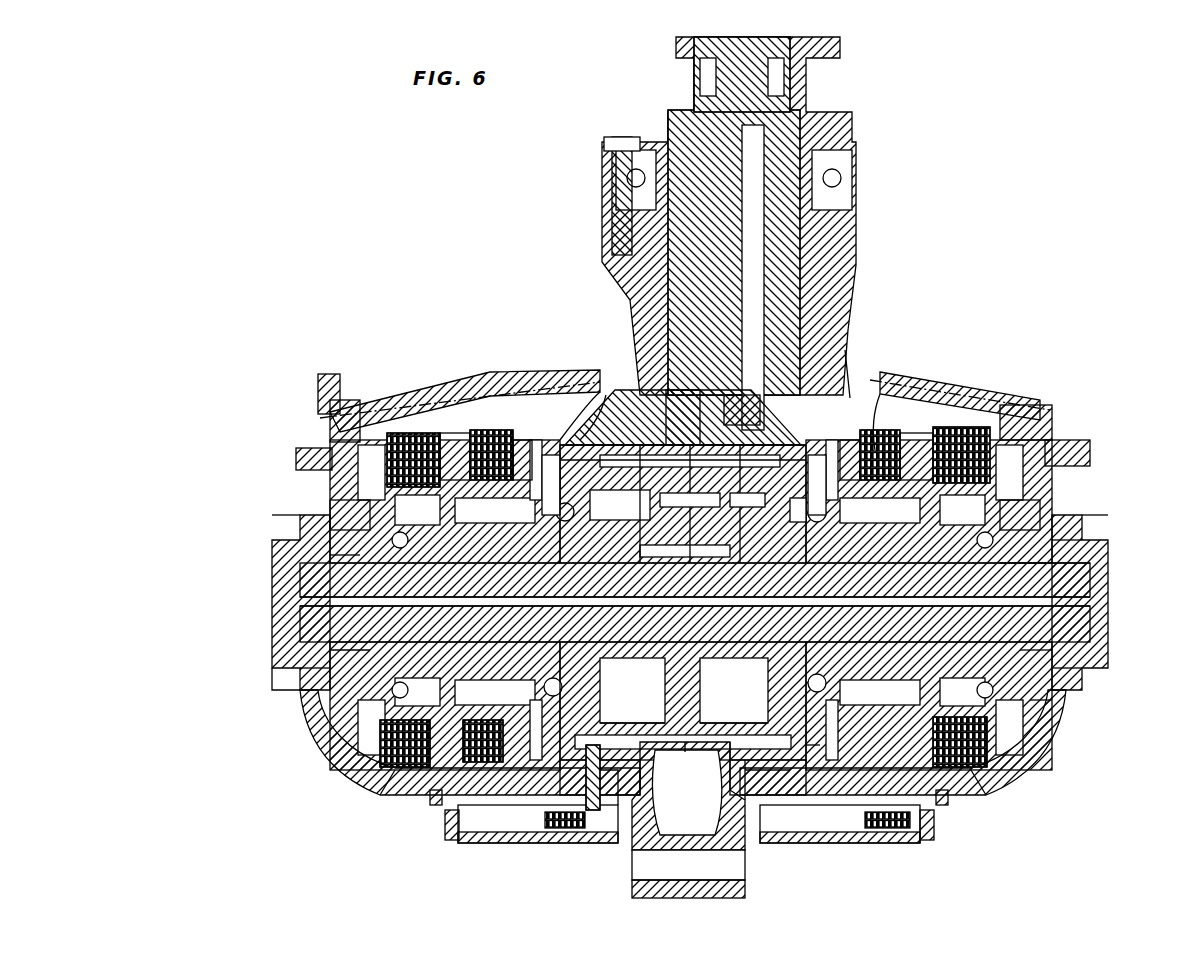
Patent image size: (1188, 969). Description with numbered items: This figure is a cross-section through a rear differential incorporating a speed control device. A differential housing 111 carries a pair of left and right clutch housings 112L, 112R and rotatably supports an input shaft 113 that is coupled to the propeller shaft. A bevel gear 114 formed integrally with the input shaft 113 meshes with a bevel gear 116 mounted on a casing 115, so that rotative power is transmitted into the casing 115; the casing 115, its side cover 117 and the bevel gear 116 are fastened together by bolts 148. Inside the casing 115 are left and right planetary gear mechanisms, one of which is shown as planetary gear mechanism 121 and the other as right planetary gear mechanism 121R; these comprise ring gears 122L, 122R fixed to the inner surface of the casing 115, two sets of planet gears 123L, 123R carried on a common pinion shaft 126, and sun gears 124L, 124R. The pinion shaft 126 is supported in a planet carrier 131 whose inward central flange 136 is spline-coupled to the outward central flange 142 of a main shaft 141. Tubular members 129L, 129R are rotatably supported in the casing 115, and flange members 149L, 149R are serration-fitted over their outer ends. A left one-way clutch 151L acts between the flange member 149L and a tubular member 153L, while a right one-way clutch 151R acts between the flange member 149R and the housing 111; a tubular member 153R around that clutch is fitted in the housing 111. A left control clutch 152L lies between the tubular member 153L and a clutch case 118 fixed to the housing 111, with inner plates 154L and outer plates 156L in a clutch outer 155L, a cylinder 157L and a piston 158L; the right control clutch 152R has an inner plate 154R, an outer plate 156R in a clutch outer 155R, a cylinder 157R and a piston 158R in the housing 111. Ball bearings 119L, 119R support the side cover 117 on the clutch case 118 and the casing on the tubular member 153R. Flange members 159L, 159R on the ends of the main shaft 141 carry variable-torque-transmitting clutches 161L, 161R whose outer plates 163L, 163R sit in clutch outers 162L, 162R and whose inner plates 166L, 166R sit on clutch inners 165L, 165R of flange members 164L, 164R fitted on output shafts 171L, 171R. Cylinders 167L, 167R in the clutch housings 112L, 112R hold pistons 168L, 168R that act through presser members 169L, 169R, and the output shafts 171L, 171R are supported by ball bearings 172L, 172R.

The differential housing 111 is at (758, 765).
The left clutch housing 112L is at (372, 790).
The right clutch housing 112R is at (1008, 776).
The input shaft 113 is at (770, 300).
The bevel gear 114 is at (850, 395).
The casing 115 is at (688, 820).
The bevel gear 116 is at (592, 812).
The side cover 117 is at (585, 442).
The clutch case 118 is at (540, 432).
The ball bearing 119L is at (604, 440).
The ball bearing 119R is at (910, 450).
The planetary gear mechanism 121 is at (705, 465).
The right planetary gear mechanism 121R is at (800, 500).
The left ring gear 122L is at (662, 752).
The right ring gear 122R is at (740, 738).
The left planet gears 123L is at (600, 440).
The right planet gears 123R is at (760, 490).
The left sun gear 124L is at (632, 690).
The right sun gear 124R is at (734, 690).
The pinion shaft 126 is at (722, 490).
The left tubular member 129L is at (298, 458).
The right tubular member 129R is at (1062, 542).
The planet carrier 131 is at (686, 745).
The inward central flange 136 is at (734, 706).
The main shaft 141 is at (790, 775).
The outward central flange 142 is at (632, 705).
The bolts 148 is at (600, 810).
The left flange member 149L is at (380, 602).
The right flange member 149R is at (1040, 562).
The left one-way clutch 151L is at (322, 440).
The right one-way clutch 151R is at (1050, 703).
The left control clutch 152L is at (465, 432).
The right control clutch 152R is at (945, 432).
The left tubular member 153L is at (345, 650).
The right tubular member 153R is at (812, 748).
The inner plates 154L is at (452, 840).
The inner plate 154R is at (888, 820).
The clutch outer 155L is at (480, 843).
The clutch outer 155R is at (900, 843).
The outer plates 156L is at (508, 440).
The outer plate 156R is at (905, 440).
The cylinder 157L is at (555, 828).
The cylinder 157R is at (865, 822).
The piston 158L is at (550, 455).
The piston 158R is at (880, 440).
The left flange member 159L is at (290, 540).
The right flange member 159R is at (1085, 575).
The left variable-torque-transmitting clutch 161L is at (388, 433).
The right variable-torque-transmitting clutch 161R is at (1012, 430).
The clutch outer 162L is at (435, 806).
The clutch outer 162R is at (950, 800).
The outer plates 163L is at (418, 432).
The outer plates 163R is at (968, 440).
The flange member 164L is at (332, 558).
The flange member 164R is at (1040, 652).
The clutch inner 165L is at (285, 680).
The clutch inner 165R is at (1062, 442).
The inner plates 166L is at (395, 796).
The inner plates 166R is at (968, 798).
The cylinder 167L is at (325, 742).
The cylinder 167R is at (1035, 745).
The piston 168L is at (338, 505).
The piston 168R is at (1040, 495).
The presser member 169L is at (325, 758).
The presser member 169R is at (1052, 420).
The left output shaft 171L is at (305, 598).
The right output shaft 171R is at (1085, 590).
The ball bearing 172L is at (320, 670).
The ball bearing 172R is at (1050, 688).